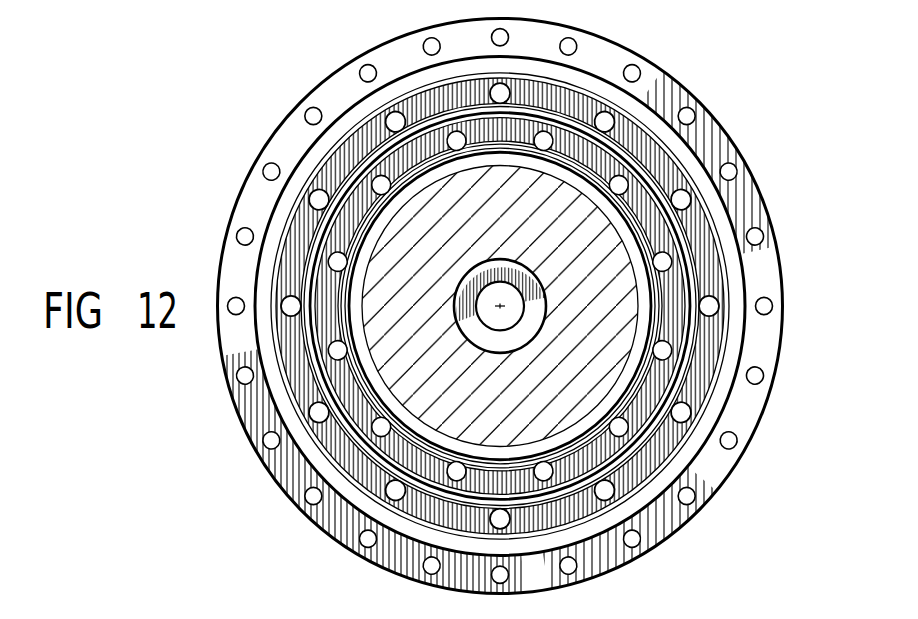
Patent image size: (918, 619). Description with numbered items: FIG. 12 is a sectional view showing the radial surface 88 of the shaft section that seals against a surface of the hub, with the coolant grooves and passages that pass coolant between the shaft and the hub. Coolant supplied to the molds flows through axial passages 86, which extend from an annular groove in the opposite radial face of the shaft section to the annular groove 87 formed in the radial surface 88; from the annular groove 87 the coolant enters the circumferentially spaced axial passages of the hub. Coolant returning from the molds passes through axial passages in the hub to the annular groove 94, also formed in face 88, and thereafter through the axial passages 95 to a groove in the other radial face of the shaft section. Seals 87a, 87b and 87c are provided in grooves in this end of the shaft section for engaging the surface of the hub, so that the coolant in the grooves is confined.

The axial passages 86 is at (680, 206).
The annular groove 87 is at (665, 182).
The seal 87a is at (290, 215).
The seal 87b is at (330, 192).
The seal 87c is at (410, 170).
The radial surface 88 is at (712, 137).
The annular groove 94 is at (665, 437).
The axial passages 95 is at (677, 412).